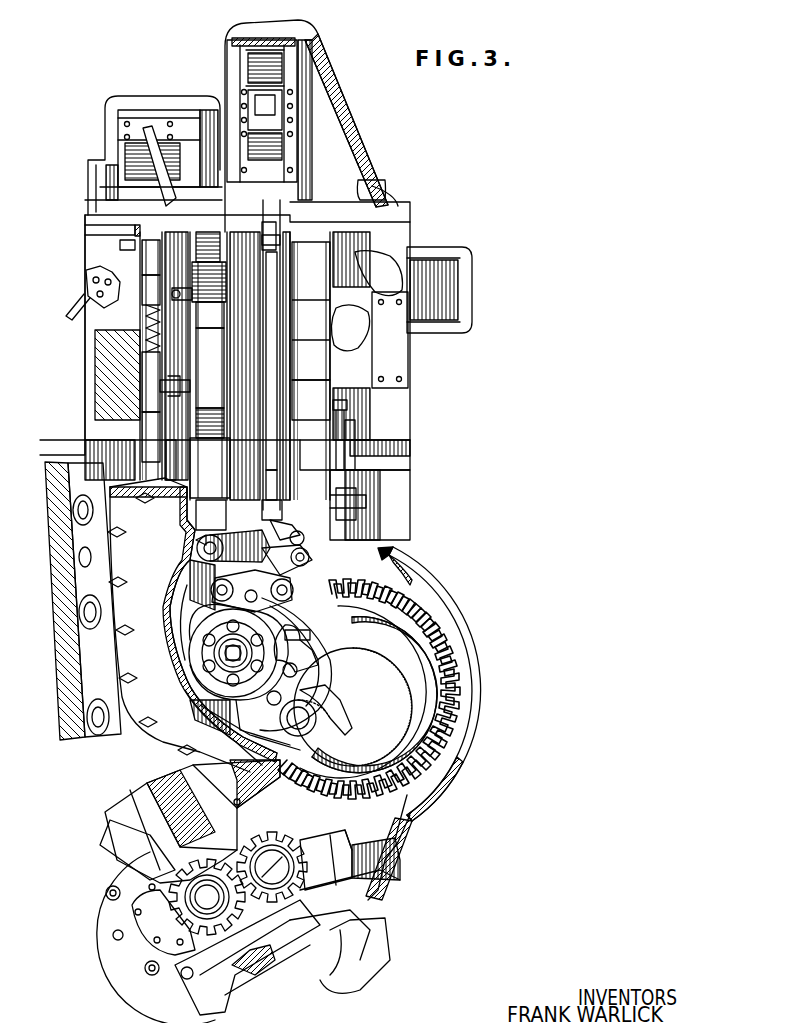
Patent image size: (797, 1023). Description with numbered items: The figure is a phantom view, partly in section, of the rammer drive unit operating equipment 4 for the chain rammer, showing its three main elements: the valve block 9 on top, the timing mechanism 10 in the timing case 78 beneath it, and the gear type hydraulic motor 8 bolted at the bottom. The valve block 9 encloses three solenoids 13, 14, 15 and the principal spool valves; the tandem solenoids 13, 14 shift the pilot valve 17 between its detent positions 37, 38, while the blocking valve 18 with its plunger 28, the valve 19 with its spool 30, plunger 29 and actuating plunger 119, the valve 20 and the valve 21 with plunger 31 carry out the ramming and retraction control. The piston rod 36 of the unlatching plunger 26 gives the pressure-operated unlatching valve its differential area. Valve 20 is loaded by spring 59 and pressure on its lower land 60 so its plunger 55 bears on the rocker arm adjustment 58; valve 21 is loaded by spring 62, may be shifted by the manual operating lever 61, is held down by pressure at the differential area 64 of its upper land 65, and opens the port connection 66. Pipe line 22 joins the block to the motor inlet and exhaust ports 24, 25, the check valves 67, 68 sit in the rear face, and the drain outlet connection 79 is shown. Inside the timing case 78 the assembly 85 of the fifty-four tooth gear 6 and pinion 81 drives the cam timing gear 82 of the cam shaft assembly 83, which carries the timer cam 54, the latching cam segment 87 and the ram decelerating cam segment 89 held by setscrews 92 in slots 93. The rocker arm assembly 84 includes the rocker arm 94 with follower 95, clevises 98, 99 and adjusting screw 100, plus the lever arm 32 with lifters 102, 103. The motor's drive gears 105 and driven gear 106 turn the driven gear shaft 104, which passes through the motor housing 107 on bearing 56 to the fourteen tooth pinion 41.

The rammer drive unit operating equipment 4 is at (408, 522).
The rammer chain sprocket gear 6 is at (400, 620).
The gear type hydraulic motor 8 is at (282, 905).
The valve block 9 is at (398, 420).
The timing mechanism 10 is at (192, 625).
The solenoid 13 is at (285, 70).
The solenoid 14 is at (292, 148).
The solenoid 15 is at (128, 116).
The pilot valve 17 is at (265, 250).
The blocking valve 18 is at (142, 380).
The valve 19 is at (322, 370).
The valve 20 is at (216, 362).
The valve 21 is at (142, 293).
The external pipe line 22 is at (358, 306).
The fluid pressure inlet port 24 is at (177, 777).
The exhaust port 25 is at (286, 962).
The plunger 26 is at (348, 414).
The plunger 28 is at (222, 282).
The plunger 29 is at (318, 290).
The plunger 30 is at (216, 330).
The plunger 31 is at (140, 275).
The lever arm 32 is at (350, 508).
The piston rod 36 is at (350, 428).
The detent position 37 is at (260, 228).
The detent position 38 is at (282, 232).
The output spur pinion 41 is at (388, 852).
The timer cam 54 is at (334, 694).
The plunger 55 is at (200, 522).
The ball bearing support 56 is at (382, 874).
The rocker arm adjustment 58 is at (197, 548).
The spring 59 is at (222, 236).
The lower land 60 is at (222, 408).
The manual operating lever 61 is at (140, 166).
The spring 62 is at (147, 312).
The differential area 64 is at (135, 226).
The upper land 65 is at (122, 244).
The port connection 66 is at (388, 206).
The adjustable spring check valve 67 is at (145, 342).
The adjustable spring check valve 68 is at (181, 458).
The timing case 78 is at (456, 652).
The drain line outlet connection 79 is at (75, 298).
The spur pinion 81 is at (318, 722).
The cam timing gear 82 is at (326, 673).
The cam shaft assembly 83 is at (215, 665).
The cam follower rocker arm assembly 84 is at (210, 589).
The gear and pinion assembly 85 is at (405, 800).
The latching cam segment 87 is at (192, 630).
The ram decelerating cam segment 89 is at (250, 731).
The setscrews 92 is at (236, 714).
The slots 93 is at (330, 710).
The rocker arm 94 is at (238, 647).
The cam follower 95 is at (297, 664).
The valve-link clevis 98 is at (308, 560).
The valve-link clevis 99 is at (292, 530).
The adjustable screw 100 is at (286, 494).
The lockscrew contact bearing lifter 102 is at (352, 492).
The lockscrew contact bearing lifter 103 is at (195, 538).
The driven gear shaft 104 is at (255, 835).
The drive gears 105 is at (158, 905).
The driven gear 106 is at (352, 908).
The motor housing 107 is at (330, 968).
The actuating plunger 119 is at (254, 475).